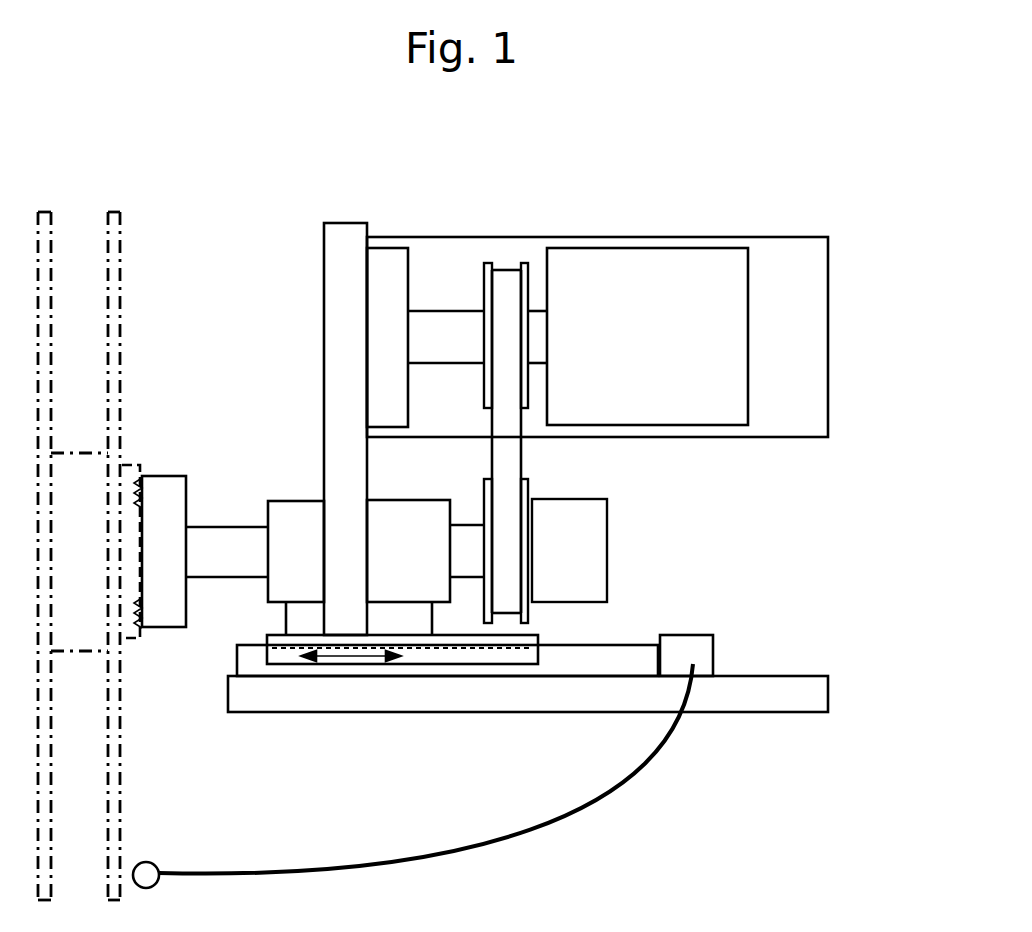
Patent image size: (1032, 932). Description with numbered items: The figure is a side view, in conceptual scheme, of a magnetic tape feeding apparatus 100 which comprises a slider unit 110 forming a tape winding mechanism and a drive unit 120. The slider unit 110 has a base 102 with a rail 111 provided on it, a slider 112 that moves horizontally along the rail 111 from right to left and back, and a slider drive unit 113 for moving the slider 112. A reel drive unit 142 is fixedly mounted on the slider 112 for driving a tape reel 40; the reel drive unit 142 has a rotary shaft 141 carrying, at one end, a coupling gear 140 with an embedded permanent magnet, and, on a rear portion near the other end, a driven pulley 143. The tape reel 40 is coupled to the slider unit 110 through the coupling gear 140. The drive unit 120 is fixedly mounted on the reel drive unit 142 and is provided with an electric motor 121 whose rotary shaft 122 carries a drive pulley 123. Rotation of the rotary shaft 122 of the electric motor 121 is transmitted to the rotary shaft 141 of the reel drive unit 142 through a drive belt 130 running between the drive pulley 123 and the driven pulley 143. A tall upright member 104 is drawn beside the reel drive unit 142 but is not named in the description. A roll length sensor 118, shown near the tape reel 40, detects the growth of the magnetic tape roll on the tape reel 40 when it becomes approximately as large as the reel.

The tape reel 40 is at (118, 212).
The magnetic tape feeding apparatus 100 is at (762, 170).
The base 102 is at (790, 687).
The column 104 is at (345, 235).
The slider unit 110 is at (797, 551).
The rail 111 is at (608, 657).
The slider 112 is at (528, 647).
The slider drive unit 113 is at (695, 647).
The roll length sensor 118 is at (146, 868).
The drive unit 120 is at (765, 237).
The electric motor 121 is at (622, 263).
The rotary shaft 122 is at (458, 309).
The drive pulley 123 is at (484, 263).
The drive belt 130 is at (510, 449).
The coupling gear 140 is at (178, 475).
The rotary shaft 141 is at (248, 580).
The reel drive unit 142 is at (288, 490).
The driven pulley 143 is at (532, 487).